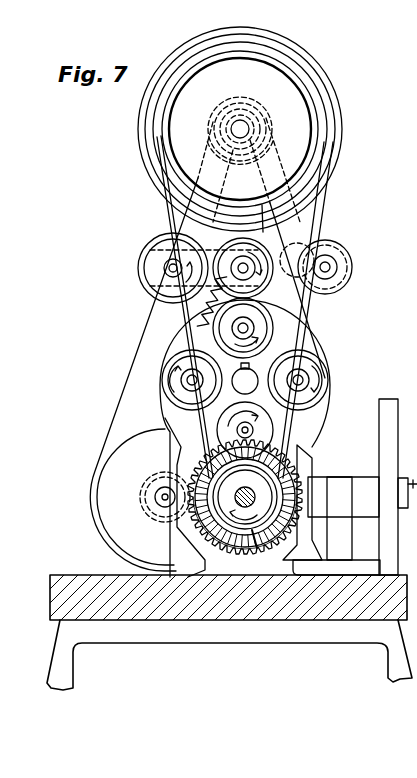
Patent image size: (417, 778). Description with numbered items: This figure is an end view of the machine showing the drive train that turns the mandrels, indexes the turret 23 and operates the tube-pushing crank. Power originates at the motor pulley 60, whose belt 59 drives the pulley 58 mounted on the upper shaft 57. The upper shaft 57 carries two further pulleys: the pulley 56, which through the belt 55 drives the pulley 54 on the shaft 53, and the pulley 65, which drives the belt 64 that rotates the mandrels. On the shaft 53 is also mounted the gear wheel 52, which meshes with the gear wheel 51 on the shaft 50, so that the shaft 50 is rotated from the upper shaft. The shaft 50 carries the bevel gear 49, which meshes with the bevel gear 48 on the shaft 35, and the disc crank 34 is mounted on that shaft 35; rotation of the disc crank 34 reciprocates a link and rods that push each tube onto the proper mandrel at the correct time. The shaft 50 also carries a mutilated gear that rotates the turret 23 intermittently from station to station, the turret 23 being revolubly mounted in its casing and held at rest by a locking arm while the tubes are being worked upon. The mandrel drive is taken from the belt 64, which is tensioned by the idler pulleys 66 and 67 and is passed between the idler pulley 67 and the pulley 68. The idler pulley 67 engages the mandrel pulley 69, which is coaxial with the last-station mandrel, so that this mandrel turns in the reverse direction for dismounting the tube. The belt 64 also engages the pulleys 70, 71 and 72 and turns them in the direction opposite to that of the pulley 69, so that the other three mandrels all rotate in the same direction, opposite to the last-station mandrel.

The turret 23 is at (286, 342).
The disc crank 34 is at (384, 428).
The shaft 35 is at (410, 479).
The bevel gear 48 is at (312, 456).
The bevel gear 49 is at (203, 530).
The shaft 50 is at (245, 497).
The gear wheel 51 is at (238, 548).
The gear wheel 52 is at (158, 476).
The shaft 53 is at (162, 501).
The pulley 54 is at (143, 434).
The belt 55 is at (106, 424).
The pulley 56 is at (268, 124).
The upper shaft 57 is at (241, 120).
The pulley 58 is at (310, 86).
The belt 59 is at (318, 164).
The motor pulley 60 is at (257, 550).
The belt 64 is at (330, 194).
The pulley 65 is at (330, 94).
The idler pulley 66 is at (353, 259).
The idler pulley 67 is at (140, 272).
The pulley 68 is at (242, 240).
The mandrel pulley 69 is at (243, 328).
The pulley 70 is at (180, 381).
The pulley 71 is at (248, 412).
The pulley 72 is at (312, 384).